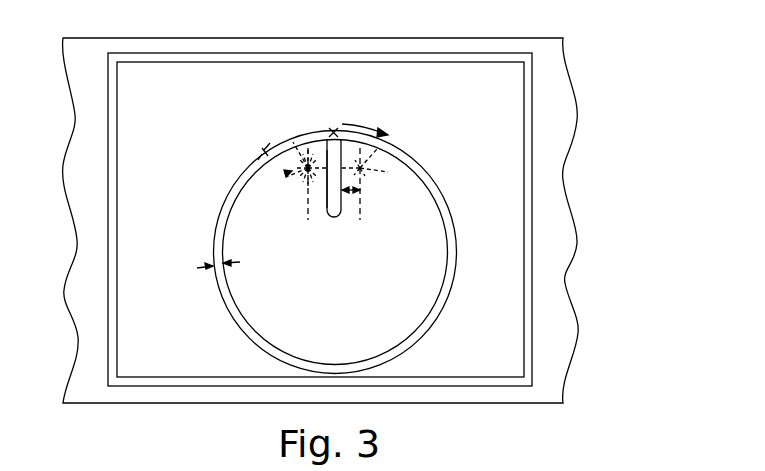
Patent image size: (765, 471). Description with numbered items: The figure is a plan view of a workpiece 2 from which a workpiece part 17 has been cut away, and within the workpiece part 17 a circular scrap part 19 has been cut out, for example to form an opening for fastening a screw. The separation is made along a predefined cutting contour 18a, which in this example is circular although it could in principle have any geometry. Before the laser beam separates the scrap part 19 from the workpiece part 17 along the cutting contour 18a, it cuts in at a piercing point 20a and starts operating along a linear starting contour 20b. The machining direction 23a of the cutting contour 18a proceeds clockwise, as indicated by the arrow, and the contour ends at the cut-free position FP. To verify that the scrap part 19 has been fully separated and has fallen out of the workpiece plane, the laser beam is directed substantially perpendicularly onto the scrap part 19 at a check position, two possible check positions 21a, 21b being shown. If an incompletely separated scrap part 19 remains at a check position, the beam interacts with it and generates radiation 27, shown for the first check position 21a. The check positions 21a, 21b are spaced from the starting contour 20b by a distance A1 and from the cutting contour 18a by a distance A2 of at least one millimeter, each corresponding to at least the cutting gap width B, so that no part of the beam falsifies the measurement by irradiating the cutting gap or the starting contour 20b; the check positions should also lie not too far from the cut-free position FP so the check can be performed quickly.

The workpiece 2 is at (543, 282).
The workpiece part 17 is at (503, 133).
The cutting contour 18a is at (250, 335).
The scrap part 19 is at (408, 310).
The piercing point 20a is at (334, 218).
The starting contour 20b is at (327, 208).
The first check position 21a is at (303, 178).
The second check position 21b is at (363, 172).
The machining direction 23a is at (362, 115).
The radiation 27 is at (305, 164).
The distance A1 is at (353, 197).
The distance A2 is at (260, 168).
The cutting gap width B is at (215, 258).
The cut-free position FP is at (333, 130).